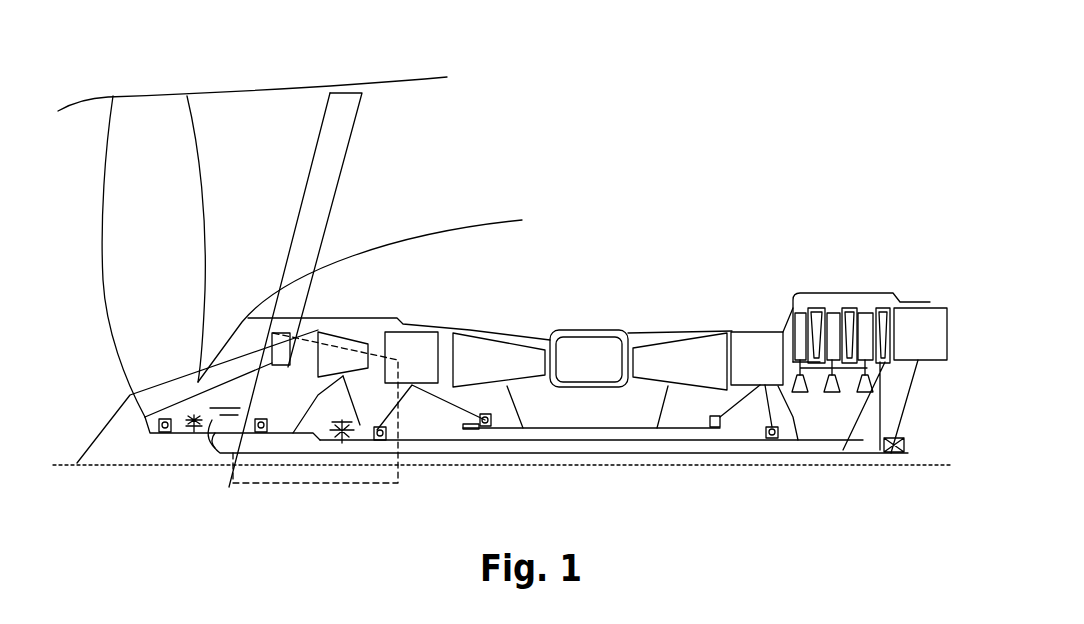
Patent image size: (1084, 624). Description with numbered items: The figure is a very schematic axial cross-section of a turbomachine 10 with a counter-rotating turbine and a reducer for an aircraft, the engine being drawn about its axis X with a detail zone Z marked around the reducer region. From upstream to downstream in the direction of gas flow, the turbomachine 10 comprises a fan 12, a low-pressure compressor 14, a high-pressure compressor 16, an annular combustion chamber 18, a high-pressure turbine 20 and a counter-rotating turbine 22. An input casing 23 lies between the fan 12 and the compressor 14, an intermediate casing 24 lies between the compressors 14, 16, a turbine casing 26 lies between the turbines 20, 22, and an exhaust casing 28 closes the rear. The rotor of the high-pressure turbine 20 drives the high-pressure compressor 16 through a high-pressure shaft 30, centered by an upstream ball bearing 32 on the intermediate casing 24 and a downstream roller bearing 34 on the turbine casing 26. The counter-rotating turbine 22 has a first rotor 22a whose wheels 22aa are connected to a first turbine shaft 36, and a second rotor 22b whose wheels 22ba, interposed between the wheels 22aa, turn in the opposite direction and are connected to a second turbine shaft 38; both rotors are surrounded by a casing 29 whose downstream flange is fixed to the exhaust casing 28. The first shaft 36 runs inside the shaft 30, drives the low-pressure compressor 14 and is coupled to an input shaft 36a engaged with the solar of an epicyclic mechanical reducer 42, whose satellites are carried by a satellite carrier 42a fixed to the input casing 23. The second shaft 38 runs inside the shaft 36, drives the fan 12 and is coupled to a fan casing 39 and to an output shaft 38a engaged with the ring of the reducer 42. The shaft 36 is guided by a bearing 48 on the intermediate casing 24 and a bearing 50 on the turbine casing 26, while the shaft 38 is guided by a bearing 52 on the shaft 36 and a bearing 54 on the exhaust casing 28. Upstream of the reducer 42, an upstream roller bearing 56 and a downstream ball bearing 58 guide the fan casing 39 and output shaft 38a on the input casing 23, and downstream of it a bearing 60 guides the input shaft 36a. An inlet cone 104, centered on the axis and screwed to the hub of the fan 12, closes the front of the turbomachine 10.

The turbomachine 10 is at (260, 58).
The fan 12 is at (92, 245).
The low-pressure compressor 14 is at (341, 318).
The high-pressure compressor 16 is at (488, 334).
The annular combustion chamber 18 is at (588, 390).
The high-pressure turbine 20 is at (677, 325).
The counter-rotating turbine 22 is at (828, 400).
The first rotor 22a is at (802, 324).
The wheels of the first rotor 22aa is at (820, 340).
The second rotor 22b is at (888, 302).
The wheels of the second rotor 22ba is at (847, 340).
The input casing 23 is at (342, 183).
The intermediate casing 24 is at (420, 316).
The turbine casing 26 is at (780, 400).
The exhaust casing 28 is at (930, 363).
The casing 29 is at (868, 300).
The high-pressure shaft 30 is at (490, 430).
The upstream ball bearing 32 is at (485, 428).
The downstream roller bearing 34 is at (747, 441).
The first turbine shaft 36 is at (703, 443).
The input shaft 36a is at (307, 428).
The second turbine shaft 38 is at (640, 455).
The output shaft 38a is at (240, 390).
The fan casing 39 is at (140, 432).
The mechanical reducer 42 is at (214, 452).
The satellite carrier 42a is at (248, 318).
The bearing 48 is at (380, 442).
The bearing 50 is at (752, 443).
The bearing 52 is at (342, 444).
The bearing 54 is at (877, 453).
The upstream roller bearing 56 is at (165, 435).
The downstream ball bearing 58 is at (195, 434).
The bearing 60 is at (260, 434).
The inlet cone 104 is at (88, 430).
The detail zone Z is at (400, 472).
The engine axis X is at (932, 467).